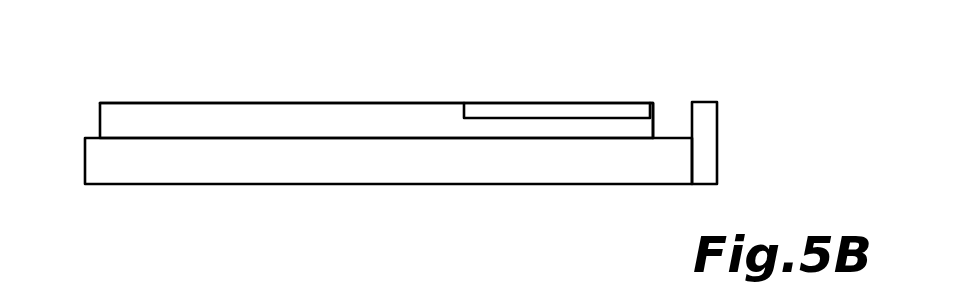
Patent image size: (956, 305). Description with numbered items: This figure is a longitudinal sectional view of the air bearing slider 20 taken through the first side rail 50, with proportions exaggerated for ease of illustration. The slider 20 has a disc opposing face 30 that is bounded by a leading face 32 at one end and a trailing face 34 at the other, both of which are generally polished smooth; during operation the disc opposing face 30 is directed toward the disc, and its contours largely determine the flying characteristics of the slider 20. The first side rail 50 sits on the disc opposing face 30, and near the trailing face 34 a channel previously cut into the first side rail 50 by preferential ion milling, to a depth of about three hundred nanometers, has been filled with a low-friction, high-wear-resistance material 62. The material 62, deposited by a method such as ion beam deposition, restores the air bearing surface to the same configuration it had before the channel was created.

The air bearing slider 20 is at (70, 119).
The disc opposing face 30 is at (667, 134).
The leading face 32 is at (83, 169).
The trailing face 34 is at (719, 145).
The first side rail 50 is at (147, 118).
The low-friction, high-wear-resistance material 62 is at (498, 110).